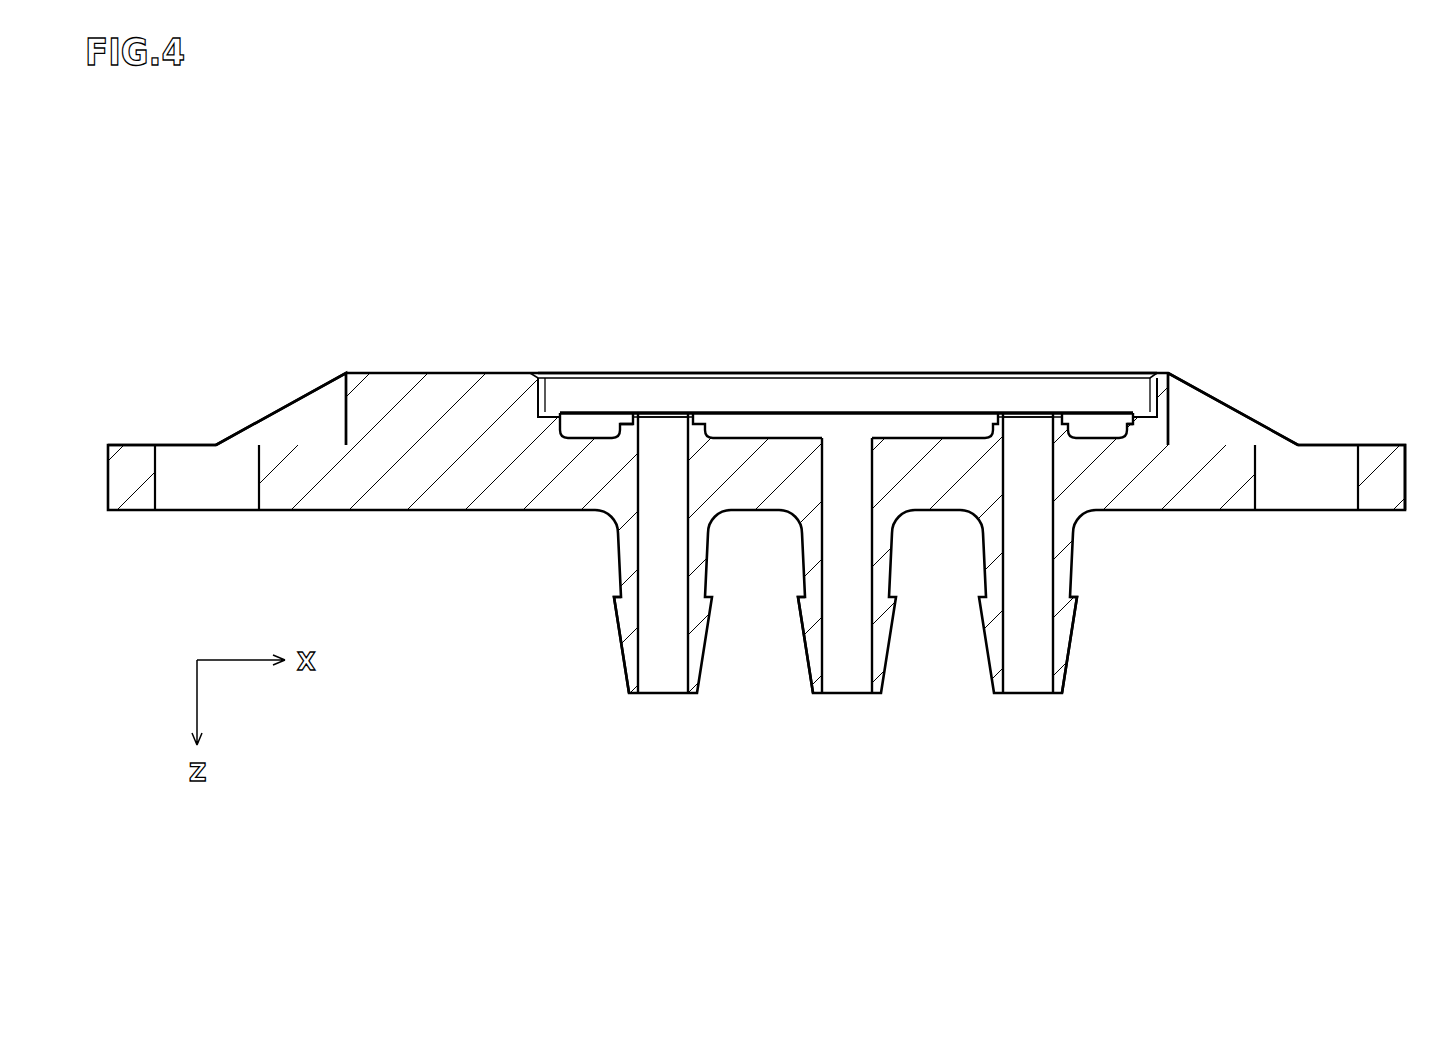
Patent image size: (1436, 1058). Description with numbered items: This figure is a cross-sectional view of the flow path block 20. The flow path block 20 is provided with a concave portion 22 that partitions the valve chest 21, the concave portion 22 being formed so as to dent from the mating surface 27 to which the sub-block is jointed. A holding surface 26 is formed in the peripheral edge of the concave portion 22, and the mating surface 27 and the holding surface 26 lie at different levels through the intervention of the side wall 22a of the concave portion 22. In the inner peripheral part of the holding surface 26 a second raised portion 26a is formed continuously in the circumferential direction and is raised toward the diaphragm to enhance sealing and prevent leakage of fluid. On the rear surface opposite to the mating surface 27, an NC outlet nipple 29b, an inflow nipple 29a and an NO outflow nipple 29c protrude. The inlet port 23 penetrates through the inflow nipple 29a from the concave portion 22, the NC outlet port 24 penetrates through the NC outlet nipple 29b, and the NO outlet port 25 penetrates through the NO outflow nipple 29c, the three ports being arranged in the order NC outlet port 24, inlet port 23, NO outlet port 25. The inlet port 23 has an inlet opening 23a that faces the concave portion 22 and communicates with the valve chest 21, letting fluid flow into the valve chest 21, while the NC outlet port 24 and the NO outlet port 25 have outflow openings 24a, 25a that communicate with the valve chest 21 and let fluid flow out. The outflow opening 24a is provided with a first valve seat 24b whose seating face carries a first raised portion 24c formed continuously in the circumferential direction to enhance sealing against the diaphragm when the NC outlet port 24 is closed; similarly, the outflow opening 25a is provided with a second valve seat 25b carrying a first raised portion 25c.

The flow path block 20 is at (1221, 326).
The valve chest 21 is at (960, 412).
The concave portion 22 is at (1101, 383).
The side wall of the concave portion 22a is at (577, 390).
The inlet port 23 is at (855, 660).
The inlet opening 23a is at (838, 438).
The NC outlet port 24 is at (670, 661).
The outflow opening of the NC outlet port 24a is at (663, 415).
The first valve seat 24b is at (630, 428).
The first raised portion 24c is at (630, 415).
The NO outlet port 25 is at (1037, 660).
The outflow opening of the NO outlet port 25a is at (1025, 420).
The second valve seat 25b is at (1060, 427).
The first raised portion of the second valve seat 25c is at (1063, 413).
The holding surface 26 is at (547, 413).
The second raised portion 26a is at (1132, 413).
The mating surface 27 is at (387, 372).
The inflow nipple 29a is at (812, 642).
The NC outlet nipple 29b is at (632, 628).
The NO outflow nipple 29c is at (1062, 642).